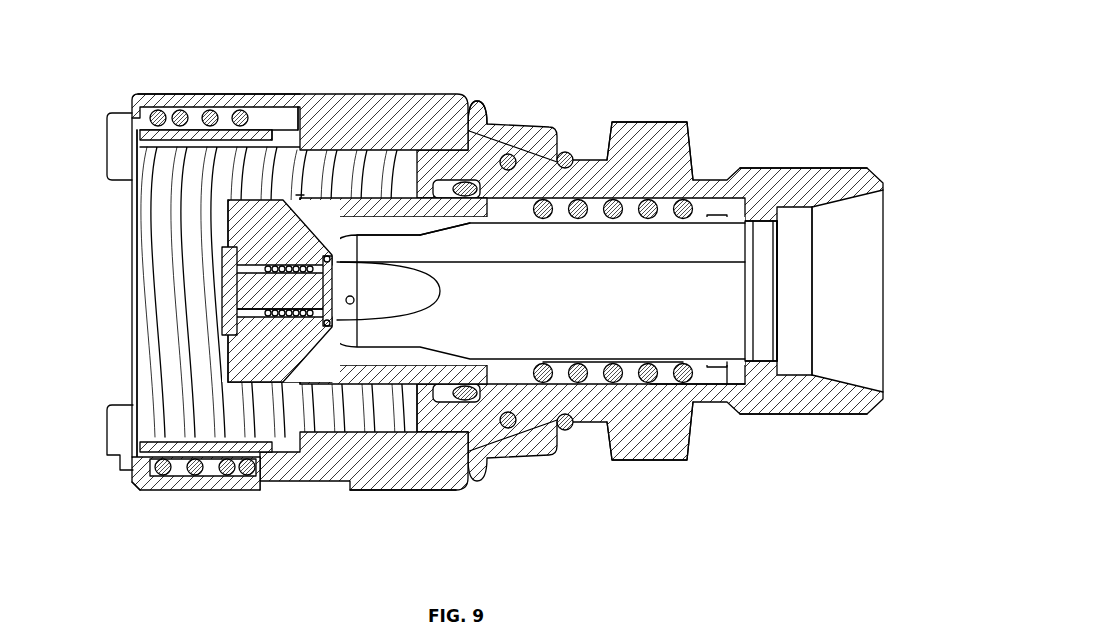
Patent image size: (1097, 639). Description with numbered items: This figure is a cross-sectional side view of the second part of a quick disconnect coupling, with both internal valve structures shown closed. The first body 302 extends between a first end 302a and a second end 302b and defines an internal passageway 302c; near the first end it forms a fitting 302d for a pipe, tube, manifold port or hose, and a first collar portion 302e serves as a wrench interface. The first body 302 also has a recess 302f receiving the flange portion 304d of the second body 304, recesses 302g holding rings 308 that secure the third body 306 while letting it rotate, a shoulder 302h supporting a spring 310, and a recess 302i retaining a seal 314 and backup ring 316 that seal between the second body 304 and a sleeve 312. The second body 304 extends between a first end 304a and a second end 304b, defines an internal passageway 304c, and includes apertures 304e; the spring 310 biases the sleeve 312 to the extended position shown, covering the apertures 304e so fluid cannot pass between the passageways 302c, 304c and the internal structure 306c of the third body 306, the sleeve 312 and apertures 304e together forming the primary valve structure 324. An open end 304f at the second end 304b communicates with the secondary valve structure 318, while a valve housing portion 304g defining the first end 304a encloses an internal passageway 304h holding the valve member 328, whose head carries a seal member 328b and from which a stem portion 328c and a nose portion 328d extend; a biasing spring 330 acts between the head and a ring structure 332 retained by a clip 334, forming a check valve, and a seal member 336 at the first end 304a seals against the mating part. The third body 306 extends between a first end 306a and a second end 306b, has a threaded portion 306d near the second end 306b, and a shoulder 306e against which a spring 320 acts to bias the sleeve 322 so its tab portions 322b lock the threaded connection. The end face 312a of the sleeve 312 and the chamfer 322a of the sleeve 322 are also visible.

The first body 302 is at (658, 452).
The first end 302a is at (883, 382).
The second end 302b is at (413, 418).
The internal passageway 302c is at (762, 290).
The fitting 302d is at (830, 185).
The first collar portion 302e is at (642, 125).
The recess 302f is at (737, 366).
The recesses 302g is at (510, 428).
The shoulder 302h is at (691, 373).
The recess 302i is at (462, 110).
The second body 304 is at (722, 217).
The first end 304a is at (742, 252).
The second end 304b is at (222, 140).
The internal passageway 304c is at (620, 343).
The flange portion 304d is at (727, 368).
The apertures 304e is at (352, 298).
The open end 304f is at (356, 282).
The valve housing portion 304g is at (237, 352).
The internal passageway 304h is at (283, 335).
The third body 306 is at (440, 145).
The first end 306a is at (423, 433).
The second end 306b is at (200, 330).
The internal structure 306c is at (175, 215).
The threaded portion 306d is at (158, 104).
The shoulder 306e is at (253, 472).
The rings 308 is at (511, 155).
The spring 310 is at (655, 198).
The sleeve 312 is at (380, 222).
The insulator end 312a is at (303, 145).
The seal 314 is at (497, 443).
The backup ring 316 is at (447, 400).
The valve structure 318 is at (190, 112).
The spring 320 is at (193, 468).
The sleeve 322 is at (172, 481).
The nut chamfer 322a is at (150, 465).
The tab portions 322b is at (110, 415).
The valve structure 324 is at (397, 220).
The valve member 328 is at (236, 212).
The seal member 328b is at (250, 265).
The stem portion 328c is at (330, 300).
The nose portion 328d is at (225, 292).
The biasing spring 330 is at (267, 122).
The ring structure 332 is at (300, 330).
The clip 334 is at (334, 330).
The seal member 336 is at (228, 235).